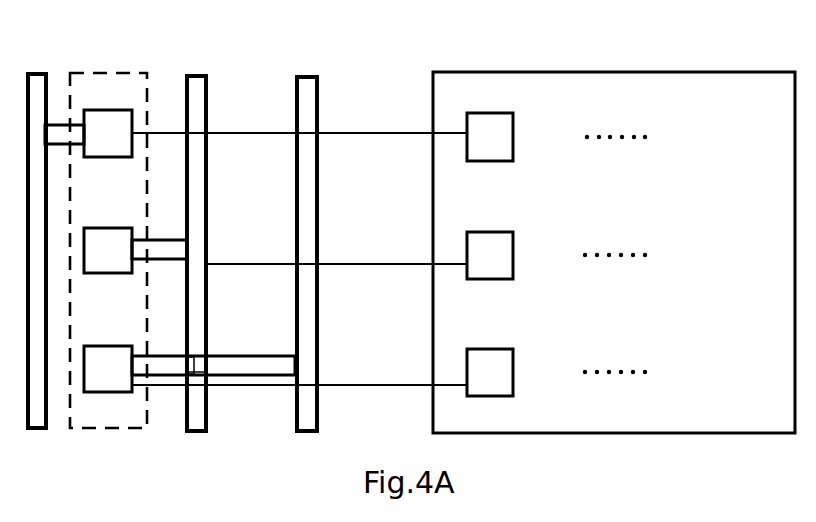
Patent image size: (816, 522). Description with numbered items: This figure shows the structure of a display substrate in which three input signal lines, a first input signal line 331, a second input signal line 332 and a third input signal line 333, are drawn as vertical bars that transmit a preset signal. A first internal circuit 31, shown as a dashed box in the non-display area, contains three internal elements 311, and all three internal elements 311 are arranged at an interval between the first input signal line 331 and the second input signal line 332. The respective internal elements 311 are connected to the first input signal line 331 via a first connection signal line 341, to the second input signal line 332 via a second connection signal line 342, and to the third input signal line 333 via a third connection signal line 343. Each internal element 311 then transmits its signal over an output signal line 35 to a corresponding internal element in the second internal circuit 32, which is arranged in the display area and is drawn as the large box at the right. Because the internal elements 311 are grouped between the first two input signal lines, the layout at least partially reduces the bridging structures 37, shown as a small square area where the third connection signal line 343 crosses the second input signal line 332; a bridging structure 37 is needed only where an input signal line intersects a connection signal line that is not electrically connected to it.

The first internal circuit 31 is at (102, 73).
The internal element 311 is at (108, 251).
The second internal circuit 32 is at (613, 72).
The first input signal line 331 is at (37, 72).
The second input signal line 332 is at (192, 74).
The third input signal line 333 is at (305, 75).
The first connection signal line 341 is at (55, 124).
The second connection signal line 342 is at (168, 238).
The third connection signal line 343 is at (182, 356).
The output signal line 35 is at (344, 133).
The bridging structure 37 is at (197, 367).